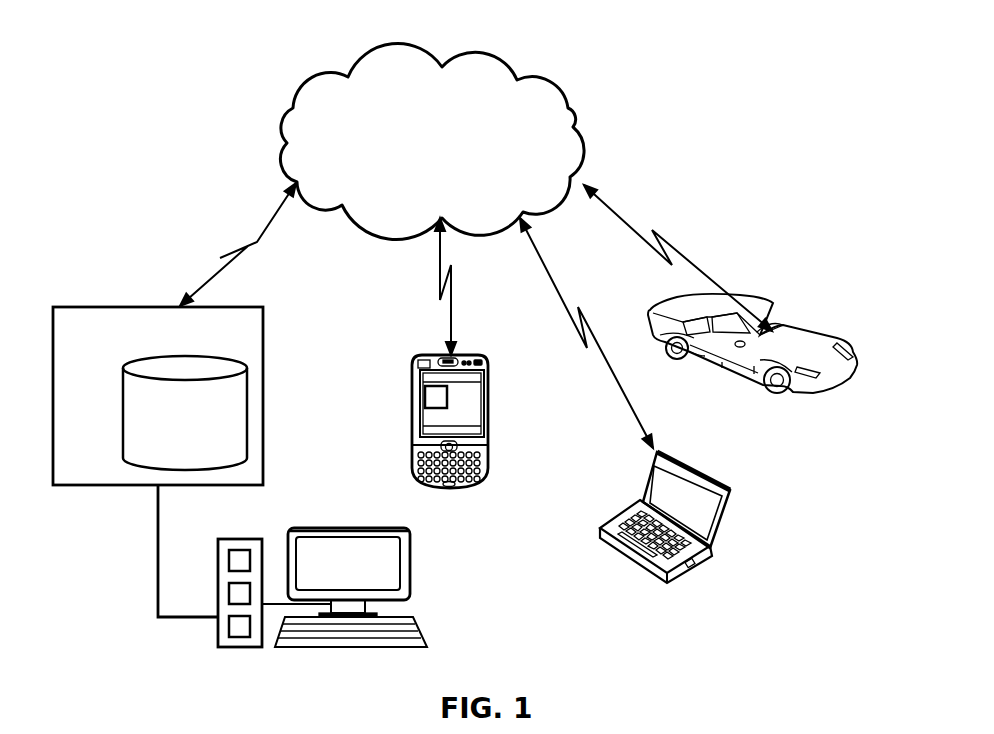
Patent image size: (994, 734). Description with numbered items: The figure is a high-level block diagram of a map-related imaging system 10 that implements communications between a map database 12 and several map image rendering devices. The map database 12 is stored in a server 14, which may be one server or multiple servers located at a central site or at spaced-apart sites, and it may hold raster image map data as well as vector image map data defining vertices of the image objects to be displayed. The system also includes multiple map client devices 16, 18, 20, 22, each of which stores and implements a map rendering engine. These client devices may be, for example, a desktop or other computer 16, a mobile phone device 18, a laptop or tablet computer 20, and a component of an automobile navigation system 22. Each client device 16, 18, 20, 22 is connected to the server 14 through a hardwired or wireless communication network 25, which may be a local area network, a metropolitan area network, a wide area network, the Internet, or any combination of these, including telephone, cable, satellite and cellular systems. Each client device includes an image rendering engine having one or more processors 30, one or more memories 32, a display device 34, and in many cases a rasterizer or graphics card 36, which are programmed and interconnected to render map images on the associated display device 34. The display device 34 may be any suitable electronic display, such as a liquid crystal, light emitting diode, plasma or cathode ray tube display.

The map-related imaging system 10 is at (208, 154).
The map database 12 is at (247, 407).
The server 14 is at (105, 307).
The map client device 16 is at (424, 558).
The map client device 18 is at (490, 348).
The map client device 20 is at (738, 529).
The map client device 22 is at (850, 402).
The communication network 25 is at (488, 57).
The processor 30 is at (490, 430).
The memory 32 is at (413, 443).
The display device 34 is at (460, 389).
The rasterizer or graphics card 36 is at (425, 397).